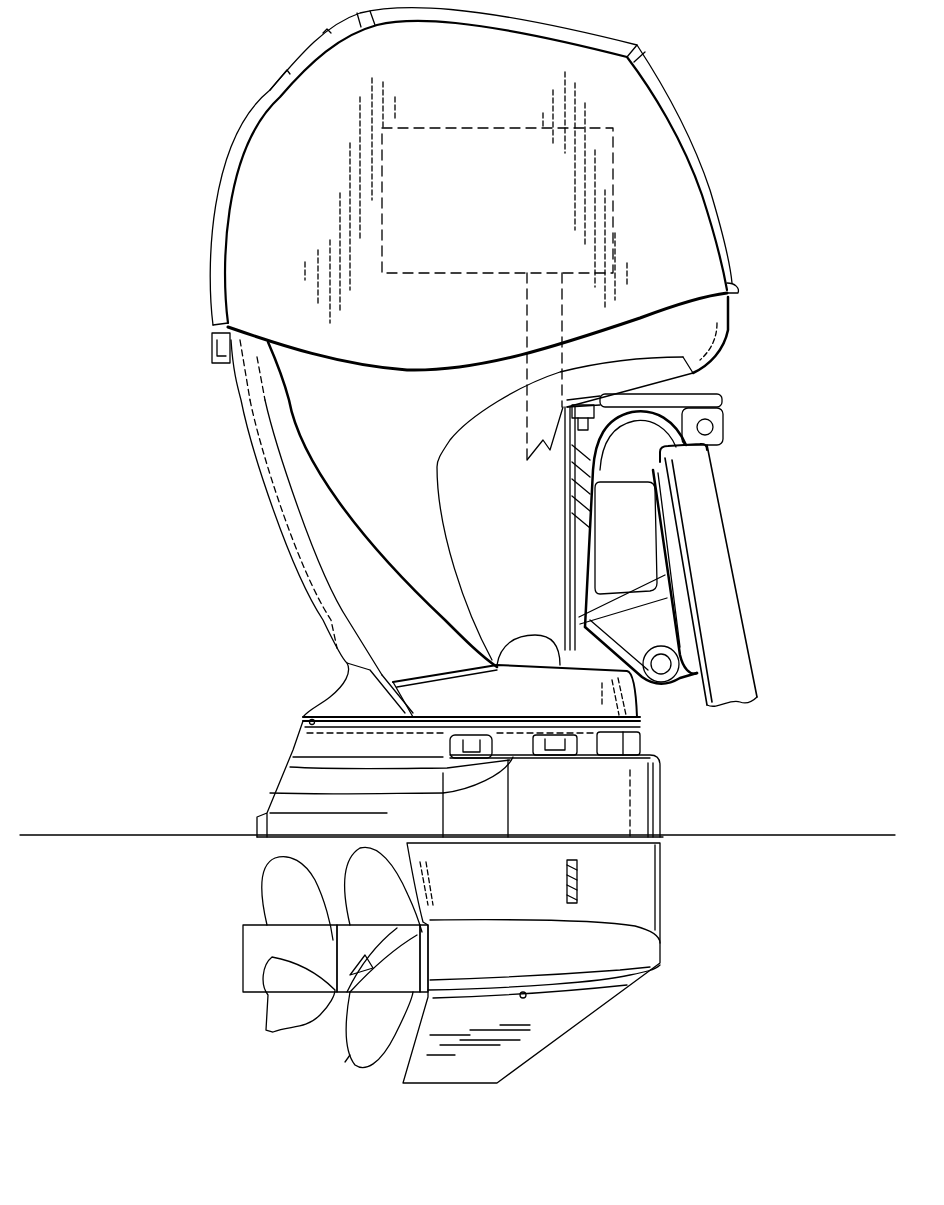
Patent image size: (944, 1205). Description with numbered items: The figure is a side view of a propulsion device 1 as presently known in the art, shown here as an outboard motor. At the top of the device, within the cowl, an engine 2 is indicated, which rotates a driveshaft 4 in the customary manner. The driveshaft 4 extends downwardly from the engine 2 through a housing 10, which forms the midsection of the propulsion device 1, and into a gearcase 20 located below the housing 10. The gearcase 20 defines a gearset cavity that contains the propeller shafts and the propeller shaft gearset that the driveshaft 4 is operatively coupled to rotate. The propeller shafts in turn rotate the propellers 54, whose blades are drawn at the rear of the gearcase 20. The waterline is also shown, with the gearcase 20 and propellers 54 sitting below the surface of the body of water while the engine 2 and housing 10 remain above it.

The propulsion device 1 is at (138, 86).
The engine 2 is at (512, 213).
The driveshaft 4 is at (547, 317).
The housing 10 is at (745, 775).
The gearcase 20 is at (732, 909).
The propellers 54 is at (263, 1018).